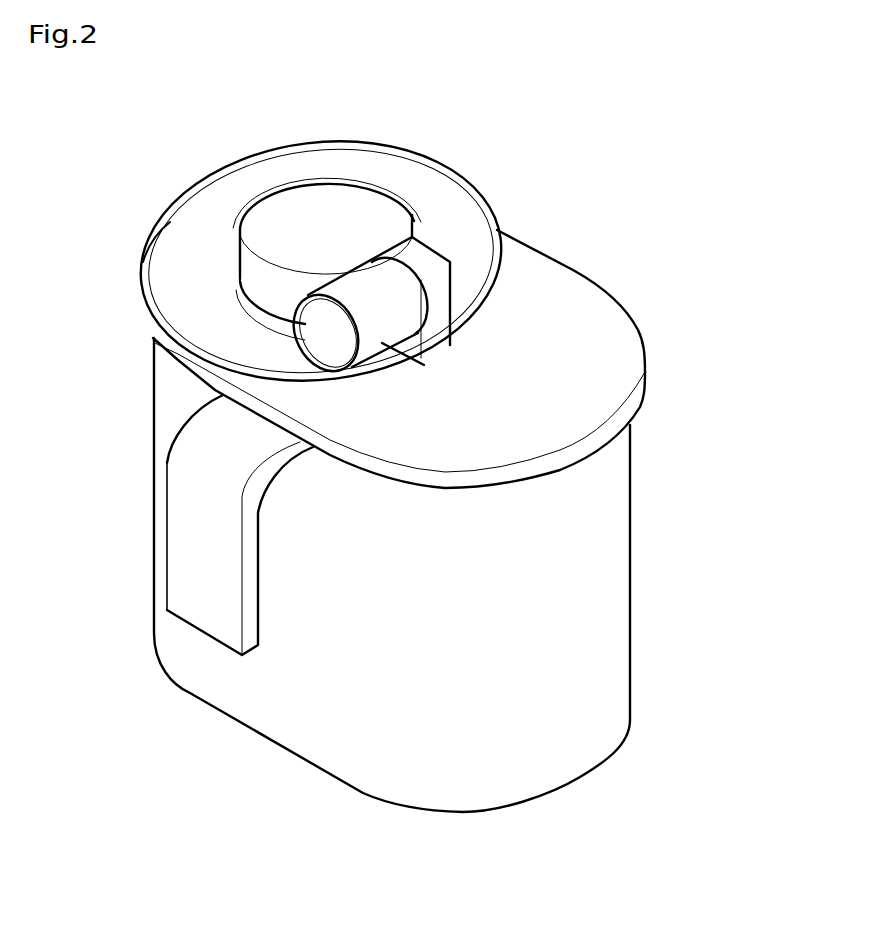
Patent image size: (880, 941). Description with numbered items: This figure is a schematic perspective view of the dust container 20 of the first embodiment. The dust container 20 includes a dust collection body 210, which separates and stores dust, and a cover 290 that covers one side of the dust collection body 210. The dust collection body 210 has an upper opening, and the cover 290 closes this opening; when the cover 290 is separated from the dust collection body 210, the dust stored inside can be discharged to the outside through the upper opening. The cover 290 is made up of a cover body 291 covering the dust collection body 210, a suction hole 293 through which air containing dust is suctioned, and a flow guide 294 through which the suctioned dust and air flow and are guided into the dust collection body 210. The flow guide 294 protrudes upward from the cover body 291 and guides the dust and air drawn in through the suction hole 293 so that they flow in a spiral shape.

The dust container 20 is at (716, 114).
The dust collection body 210 is at (652, 562).
The cover 290 is at (583, 257).
The cover body 291 is at (639, 347).
The suction hole 293 is at (303, 338).
The flow guide 294 is at (396, 167).